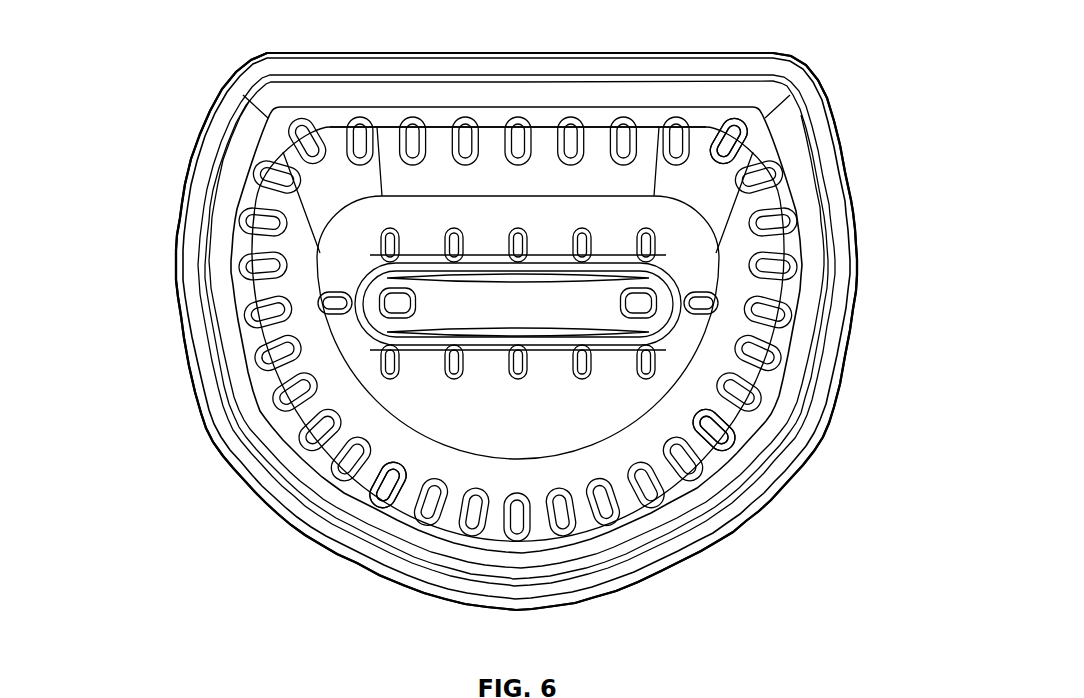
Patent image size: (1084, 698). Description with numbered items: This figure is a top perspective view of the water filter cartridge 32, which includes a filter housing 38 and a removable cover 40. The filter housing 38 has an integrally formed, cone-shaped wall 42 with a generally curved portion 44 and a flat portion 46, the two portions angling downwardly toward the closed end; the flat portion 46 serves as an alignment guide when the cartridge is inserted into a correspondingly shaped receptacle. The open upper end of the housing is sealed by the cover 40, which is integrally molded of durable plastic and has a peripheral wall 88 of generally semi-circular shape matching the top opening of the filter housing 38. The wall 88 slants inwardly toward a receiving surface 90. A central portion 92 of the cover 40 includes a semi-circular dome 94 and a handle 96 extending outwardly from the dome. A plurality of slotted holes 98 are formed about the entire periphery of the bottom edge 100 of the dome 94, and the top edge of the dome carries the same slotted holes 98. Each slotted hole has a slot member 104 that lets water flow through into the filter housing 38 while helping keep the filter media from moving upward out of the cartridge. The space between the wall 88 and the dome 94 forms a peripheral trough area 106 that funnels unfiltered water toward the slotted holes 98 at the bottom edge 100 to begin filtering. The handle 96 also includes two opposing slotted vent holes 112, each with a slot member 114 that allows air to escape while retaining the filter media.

The water filter cartridge 32 is at (128, 42).
The filter housing 38 is at (535, 42).
The removable cover 40 is at (262, 484).
The cone-shaped wall 42 is at (852, 178).
The curved portion 44 is at (744, 530).
The flat portion 46 is at (347, 53).
The peripheral wall 88 is at (173, 242).
The receiving surface 90 is at (303, 250).
The central portion 92 is at (334, 450).
The semi-circular dome 94 is at (553, 413).
The handle 96 is at (440, 313).
The slotted holes 98 is at (390, 228).
The bottom edge 100 is at (792, 248).
The slot member 104 is at (399, 500).
The peripheral trough area 106 is at (594, 165).
The slotted vent holes 112 is at (330, 303).
The slot member 114 is at (355, 303).